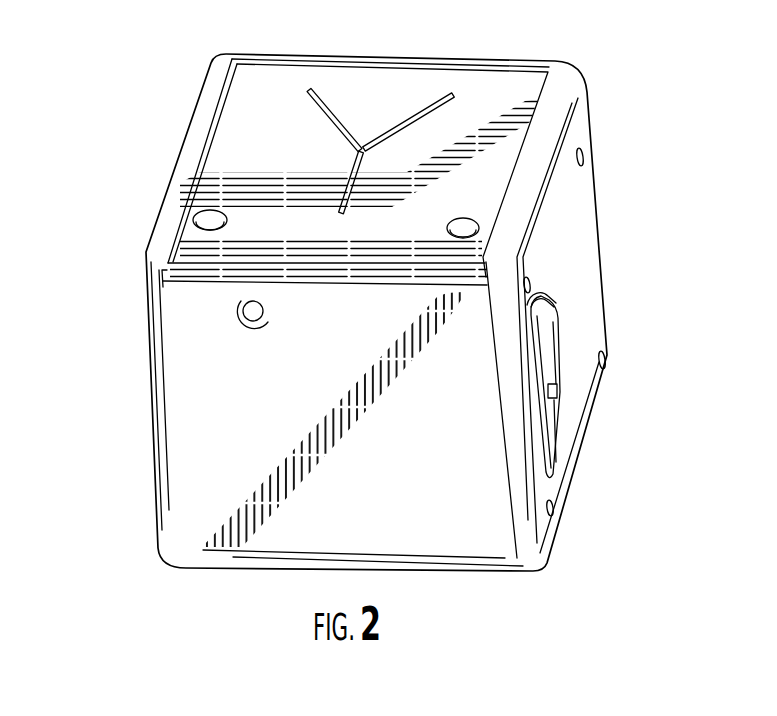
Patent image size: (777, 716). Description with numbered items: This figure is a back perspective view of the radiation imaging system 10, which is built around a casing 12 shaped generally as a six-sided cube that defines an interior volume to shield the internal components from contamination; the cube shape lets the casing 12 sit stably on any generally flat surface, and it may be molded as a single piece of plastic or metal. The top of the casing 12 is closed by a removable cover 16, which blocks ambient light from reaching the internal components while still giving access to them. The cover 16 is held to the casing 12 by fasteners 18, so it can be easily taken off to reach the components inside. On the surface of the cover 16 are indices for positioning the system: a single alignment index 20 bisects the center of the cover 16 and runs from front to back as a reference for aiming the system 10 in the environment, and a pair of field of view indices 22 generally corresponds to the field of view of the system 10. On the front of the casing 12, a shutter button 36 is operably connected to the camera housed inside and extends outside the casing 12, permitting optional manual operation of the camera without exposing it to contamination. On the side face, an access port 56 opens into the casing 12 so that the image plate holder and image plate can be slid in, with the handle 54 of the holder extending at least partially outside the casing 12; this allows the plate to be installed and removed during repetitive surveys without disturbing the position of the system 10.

The radiation imaging system 10 is at (86, 135).
The casing 12 is at (603, 272).
The removable cover 16 is at (245, 128).
The fasteners 18 is at (206, 210).
The alignment index 20 is at (337, 204).
The field of view indices 22 is at (407, 120).
The shutter button 36 is at (243, 311).
The handle 54 is at (556, 438).
The access port 56 is at (541, 293).